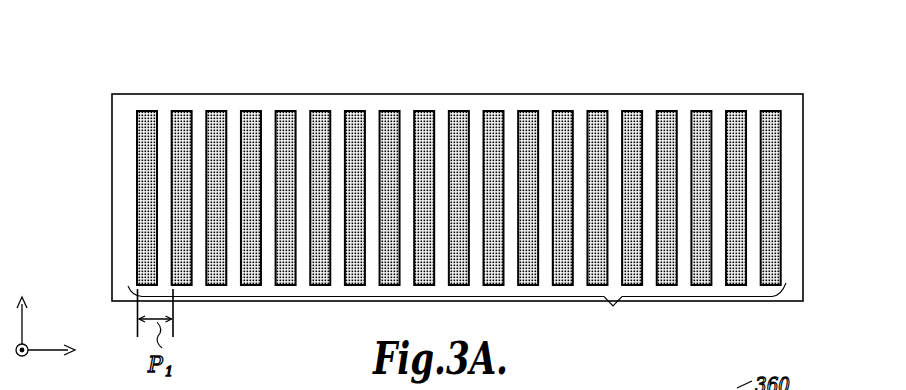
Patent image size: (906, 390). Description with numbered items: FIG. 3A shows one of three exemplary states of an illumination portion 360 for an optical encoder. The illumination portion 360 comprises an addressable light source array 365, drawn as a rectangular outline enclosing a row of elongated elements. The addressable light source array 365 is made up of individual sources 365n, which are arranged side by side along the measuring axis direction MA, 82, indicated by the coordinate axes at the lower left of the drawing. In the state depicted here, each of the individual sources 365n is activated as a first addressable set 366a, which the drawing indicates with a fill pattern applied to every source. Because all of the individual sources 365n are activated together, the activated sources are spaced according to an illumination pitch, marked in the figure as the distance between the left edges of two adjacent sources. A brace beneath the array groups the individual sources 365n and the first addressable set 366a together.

The illumination portion 360 is at (716, 67).
The addressable light source array 365 is at (129, 213).
The individual sources 365n is at (457, 310).
The first addressable set 366a is at (457, 310).
The measuring axis direction 82 is at (72, 319).